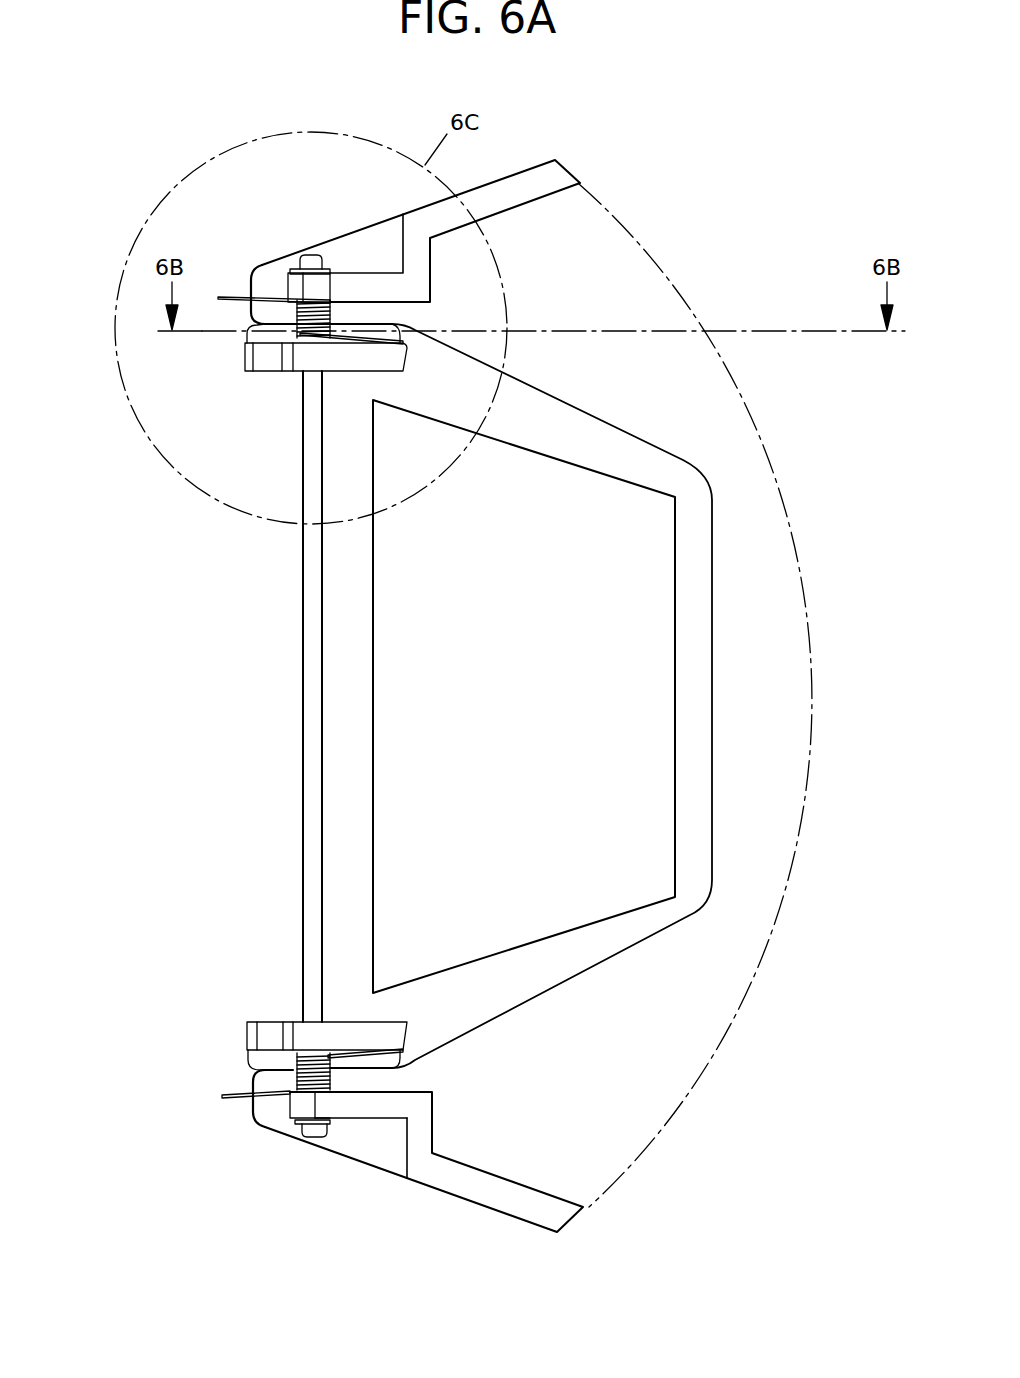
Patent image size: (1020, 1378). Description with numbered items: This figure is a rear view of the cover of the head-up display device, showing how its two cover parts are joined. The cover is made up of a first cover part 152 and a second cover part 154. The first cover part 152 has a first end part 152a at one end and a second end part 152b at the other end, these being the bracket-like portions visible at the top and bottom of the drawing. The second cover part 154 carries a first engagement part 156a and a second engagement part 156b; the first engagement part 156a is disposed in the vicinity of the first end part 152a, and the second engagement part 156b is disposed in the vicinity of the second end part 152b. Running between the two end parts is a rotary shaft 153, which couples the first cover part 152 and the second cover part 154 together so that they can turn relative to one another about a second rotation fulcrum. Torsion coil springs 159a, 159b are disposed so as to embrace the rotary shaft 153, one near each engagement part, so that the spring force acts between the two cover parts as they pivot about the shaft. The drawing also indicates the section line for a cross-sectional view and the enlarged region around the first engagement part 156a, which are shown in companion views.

The first cover part 152 is at (493, 1160).
The first end part 152a is at (278, 270).
The second end part 152b is at (277, 1105).
The rotary shaft 153 is at (313, 708).
The second cover part 154 is at (400, 620).
The first engagement part 156a is at (270, 357).
The second engagement part 156b is at (270, 1037).
The torsion coil spring 159a is at (248, 322).
The torsion coil spring 159b is at (285, 1078).